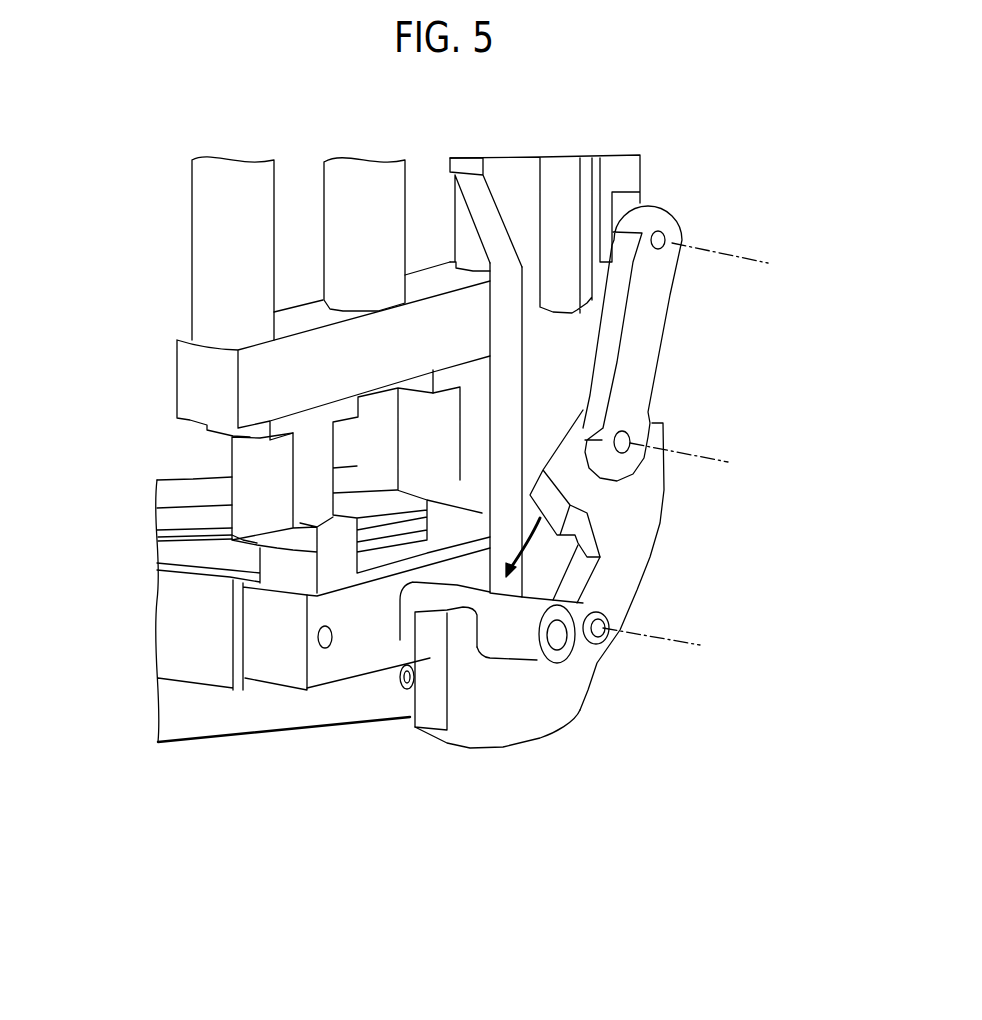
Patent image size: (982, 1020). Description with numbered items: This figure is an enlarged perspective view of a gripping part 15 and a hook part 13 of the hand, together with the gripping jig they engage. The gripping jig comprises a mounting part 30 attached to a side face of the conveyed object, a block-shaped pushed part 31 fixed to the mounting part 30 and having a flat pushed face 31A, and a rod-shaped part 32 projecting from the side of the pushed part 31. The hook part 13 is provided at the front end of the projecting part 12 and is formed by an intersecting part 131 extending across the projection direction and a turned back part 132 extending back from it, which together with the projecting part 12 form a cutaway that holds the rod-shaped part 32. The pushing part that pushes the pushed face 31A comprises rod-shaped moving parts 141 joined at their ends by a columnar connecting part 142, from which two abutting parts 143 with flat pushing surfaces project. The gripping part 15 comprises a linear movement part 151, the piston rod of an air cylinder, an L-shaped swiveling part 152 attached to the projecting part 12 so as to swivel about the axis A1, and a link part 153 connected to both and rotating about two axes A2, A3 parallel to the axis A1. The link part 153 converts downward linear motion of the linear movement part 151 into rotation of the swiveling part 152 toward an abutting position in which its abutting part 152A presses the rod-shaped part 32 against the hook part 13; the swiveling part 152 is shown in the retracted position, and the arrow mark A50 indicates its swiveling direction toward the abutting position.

The projecting part 12 is at (537, 382).
The hook part 13 is at (538, 722).
The gripping part 15 is at (620, 432).
The mounting part 30 is at (195, 663).
The pushed part 31 is at (290, 660).
The pushed face 31A is at (367, 563).
The rod-shaped part 32 is at (520, 657).
The intersecting part 131 is at (517, 717).
The turned back part 132 is at (433, 640).
The moving parts 141 is at (467, 245).
The connecting part 142 is at (203, 381).
The abutting parts 143 is at (423, 460).
The linear movement part 151 is at (622, 172).
The swiveling part 152 is at (634, 548).
The abutting part 152A is at (570, 510).
The link part 153 is at (650, 322).
The axis A1 is at (693, 647).
The axis A2 is at (733, 250).
The axis A3 is at (690, 452).
The arrow mark A50 is at (523, 550).